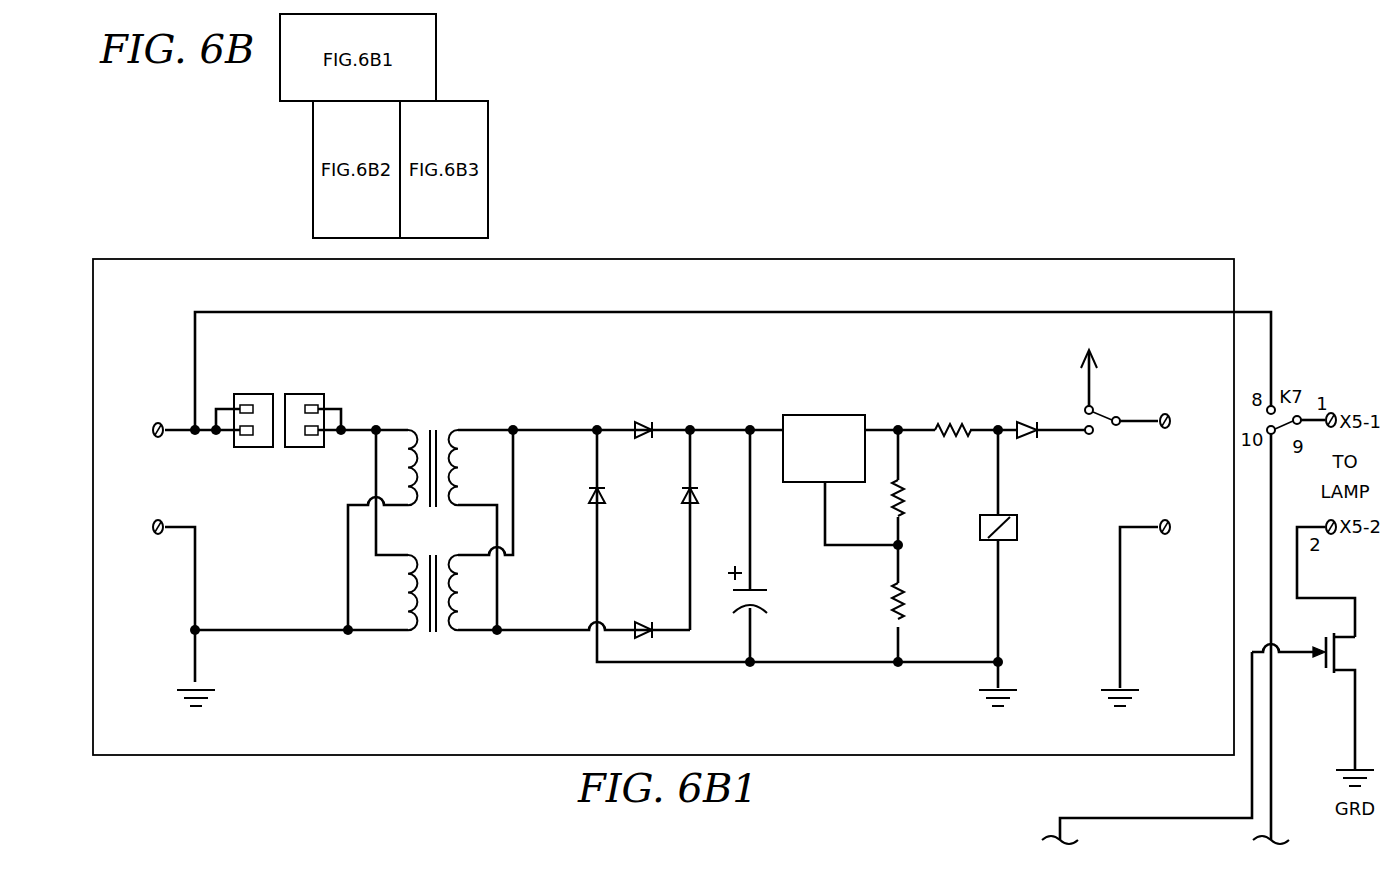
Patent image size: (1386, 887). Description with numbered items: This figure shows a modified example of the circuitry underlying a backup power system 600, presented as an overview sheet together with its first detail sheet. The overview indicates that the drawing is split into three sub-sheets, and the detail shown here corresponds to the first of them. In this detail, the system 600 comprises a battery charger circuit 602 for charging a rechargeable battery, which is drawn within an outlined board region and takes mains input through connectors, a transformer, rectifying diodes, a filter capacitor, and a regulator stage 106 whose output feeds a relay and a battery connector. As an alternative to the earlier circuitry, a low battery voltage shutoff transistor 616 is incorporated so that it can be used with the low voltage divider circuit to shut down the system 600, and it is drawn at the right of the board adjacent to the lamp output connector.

The system 600 is at (738, 248).
The battery charger circuit 602 is at (643, 728).
The voltage regulator 106 is at (840, 480).
The low battery voltage shutoff transistor 616 is at (1313, 740).